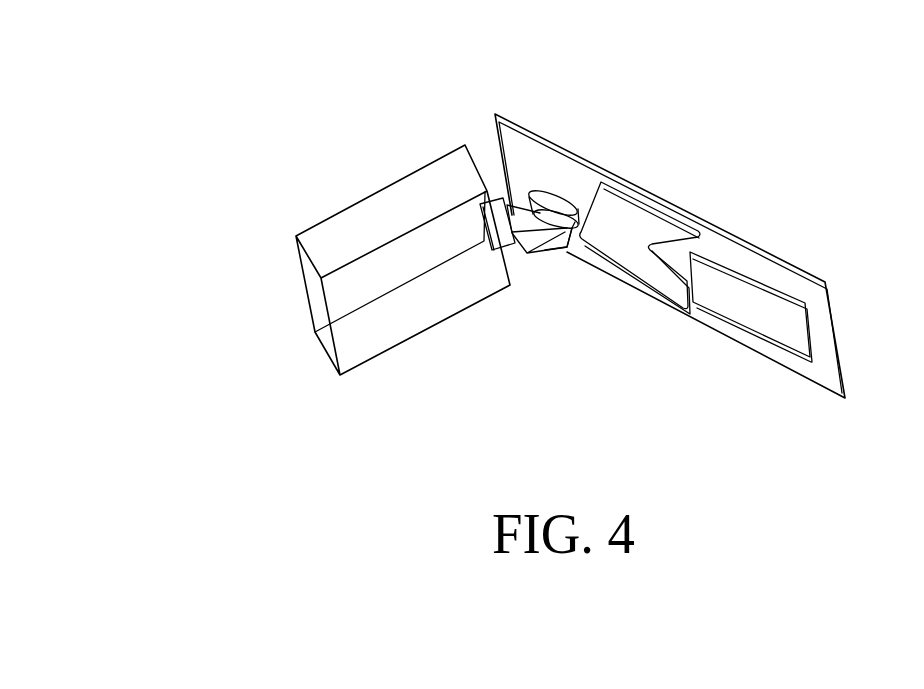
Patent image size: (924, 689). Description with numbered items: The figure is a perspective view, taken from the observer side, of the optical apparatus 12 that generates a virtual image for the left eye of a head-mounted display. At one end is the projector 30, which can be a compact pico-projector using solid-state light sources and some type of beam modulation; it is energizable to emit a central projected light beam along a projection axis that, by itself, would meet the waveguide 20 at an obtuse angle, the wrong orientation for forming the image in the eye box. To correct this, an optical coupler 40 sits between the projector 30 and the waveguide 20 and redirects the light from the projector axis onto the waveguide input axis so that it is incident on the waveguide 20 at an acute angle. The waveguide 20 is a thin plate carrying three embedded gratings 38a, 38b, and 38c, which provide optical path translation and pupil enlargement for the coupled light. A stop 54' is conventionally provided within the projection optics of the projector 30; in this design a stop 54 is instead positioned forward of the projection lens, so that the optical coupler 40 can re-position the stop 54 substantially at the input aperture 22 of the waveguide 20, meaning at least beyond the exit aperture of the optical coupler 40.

The optical apparatus 12 is at (358, 83).
The waveguide 20 is at (747, 246).
The input aperture 22 is at (567, 204).
The projector 30 is at (296, 236).
The embedded grating 38a is at (543, 187).
The embedded grating 38b is at (649, 291).
The embedded grating 38c is at (762, 325).
The optical coupler 40 is at (516, 208).
The stop 54 is at (560, 293).
The stop 54' is at (502, 297).